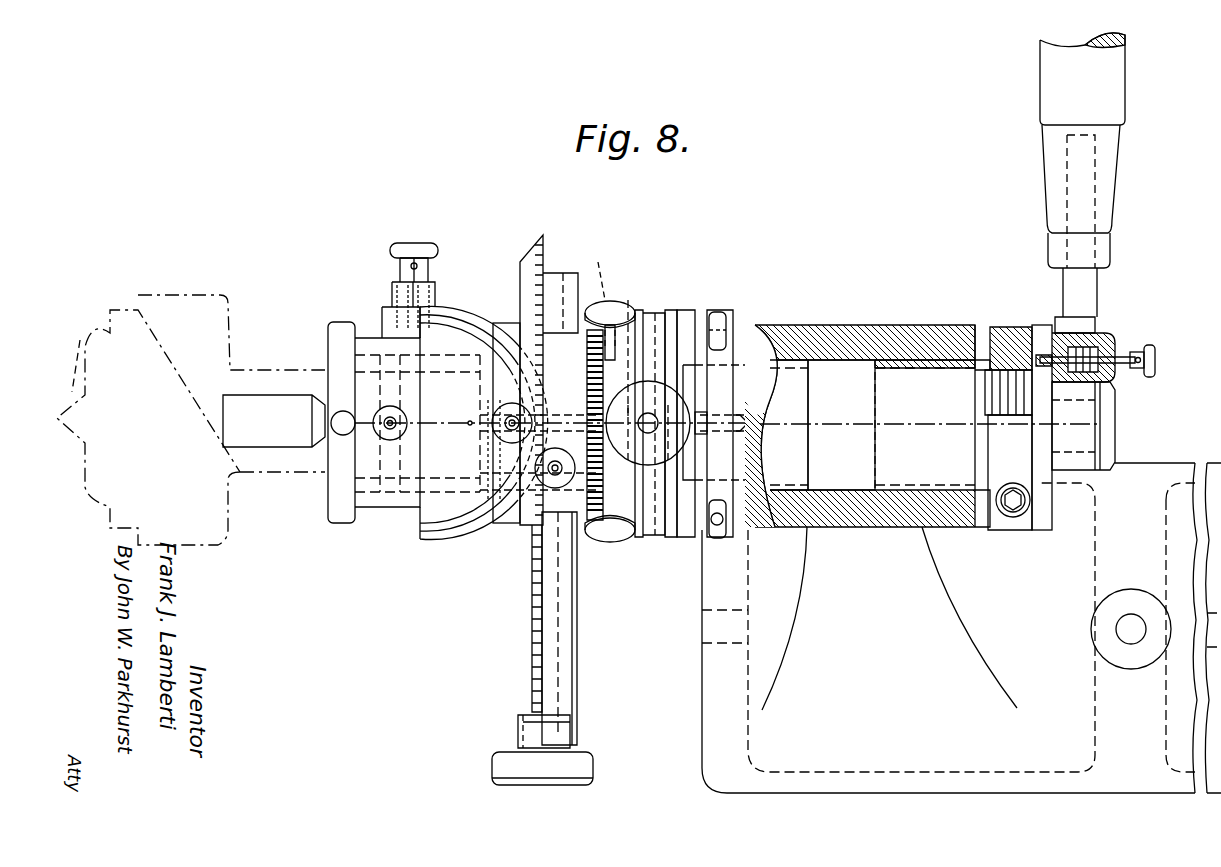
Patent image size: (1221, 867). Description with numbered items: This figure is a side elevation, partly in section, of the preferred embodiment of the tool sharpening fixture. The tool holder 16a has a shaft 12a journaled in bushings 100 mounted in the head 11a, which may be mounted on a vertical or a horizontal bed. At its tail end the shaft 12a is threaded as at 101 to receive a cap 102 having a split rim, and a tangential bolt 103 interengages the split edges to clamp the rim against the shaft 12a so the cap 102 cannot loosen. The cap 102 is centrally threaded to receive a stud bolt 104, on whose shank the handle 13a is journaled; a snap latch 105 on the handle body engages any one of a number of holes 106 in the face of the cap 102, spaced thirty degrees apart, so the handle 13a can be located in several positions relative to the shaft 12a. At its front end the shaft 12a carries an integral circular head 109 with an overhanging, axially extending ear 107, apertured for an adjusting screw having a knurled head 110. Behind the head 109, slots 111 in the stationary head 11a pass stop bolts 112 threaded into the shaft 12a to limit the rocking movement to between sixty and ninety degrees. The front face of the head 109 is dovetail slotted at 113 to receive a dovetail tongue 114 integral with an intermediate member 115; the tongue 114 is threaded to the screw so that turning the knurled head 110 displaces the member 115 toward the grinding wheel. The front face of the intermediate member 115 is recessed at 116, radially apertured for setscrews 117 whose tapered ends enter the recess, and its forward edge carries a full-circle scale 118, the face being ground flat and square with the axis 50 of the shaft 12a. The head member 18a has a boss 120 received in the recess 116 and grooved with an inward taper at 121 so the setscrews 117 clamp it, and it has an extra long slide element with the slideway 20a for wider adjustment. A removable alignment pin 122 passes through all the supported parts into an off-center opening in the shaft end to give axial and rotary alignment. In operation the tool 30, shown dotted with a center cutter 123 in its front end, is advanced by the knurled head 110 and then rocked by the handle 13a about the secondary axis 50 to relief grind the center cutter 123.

The tool 30 is at (222, 508).
The center cutter 123 is at (77, 355).
The removable alignment pin 122 is at (262, 405).
The boss 120 is at (520, 523).
The head member 18a is at (550, 355).
The slideway 20a is at (556, 613).
The inwardly tapered groove 121 is at (567, 672).
The 360° scale 118 is at (590, 502).
The setscrews 117 is at (622, 306).
The recess 116 is at (601, 302).
The tool holder 16a is at (630, 290).
The dovetail tongue 114 is at (640, 540).
The intermediate member 115 is at (647, 540).
The dovetail slot 113 is at (670, 322).
The circular head 109 is at (690, 320).
The slots 111 is at (730, 322).
The ear 107 is at (720, 318).
The stop bolts 112 is at (717, 530).
The knurled head 110 is at (665, 413).
The bushings 100 is at (818, 358).
The head 11a is at (790, 345).
The shaft 12a is at (850, 375).
The secondary axis 50 is at (858, 424).
The threaded tail portion 101 is at (1010, 340).
The cap 102 is at (1035, 528).
The tangential bolt 103 is at (1008, 512).
The holes 106 is at (1047, 352).
The snap latch 105 is at (1120, 360).
The stud bolt 104 is at (1110, 432).
The handle 13a is at (1110, 200).